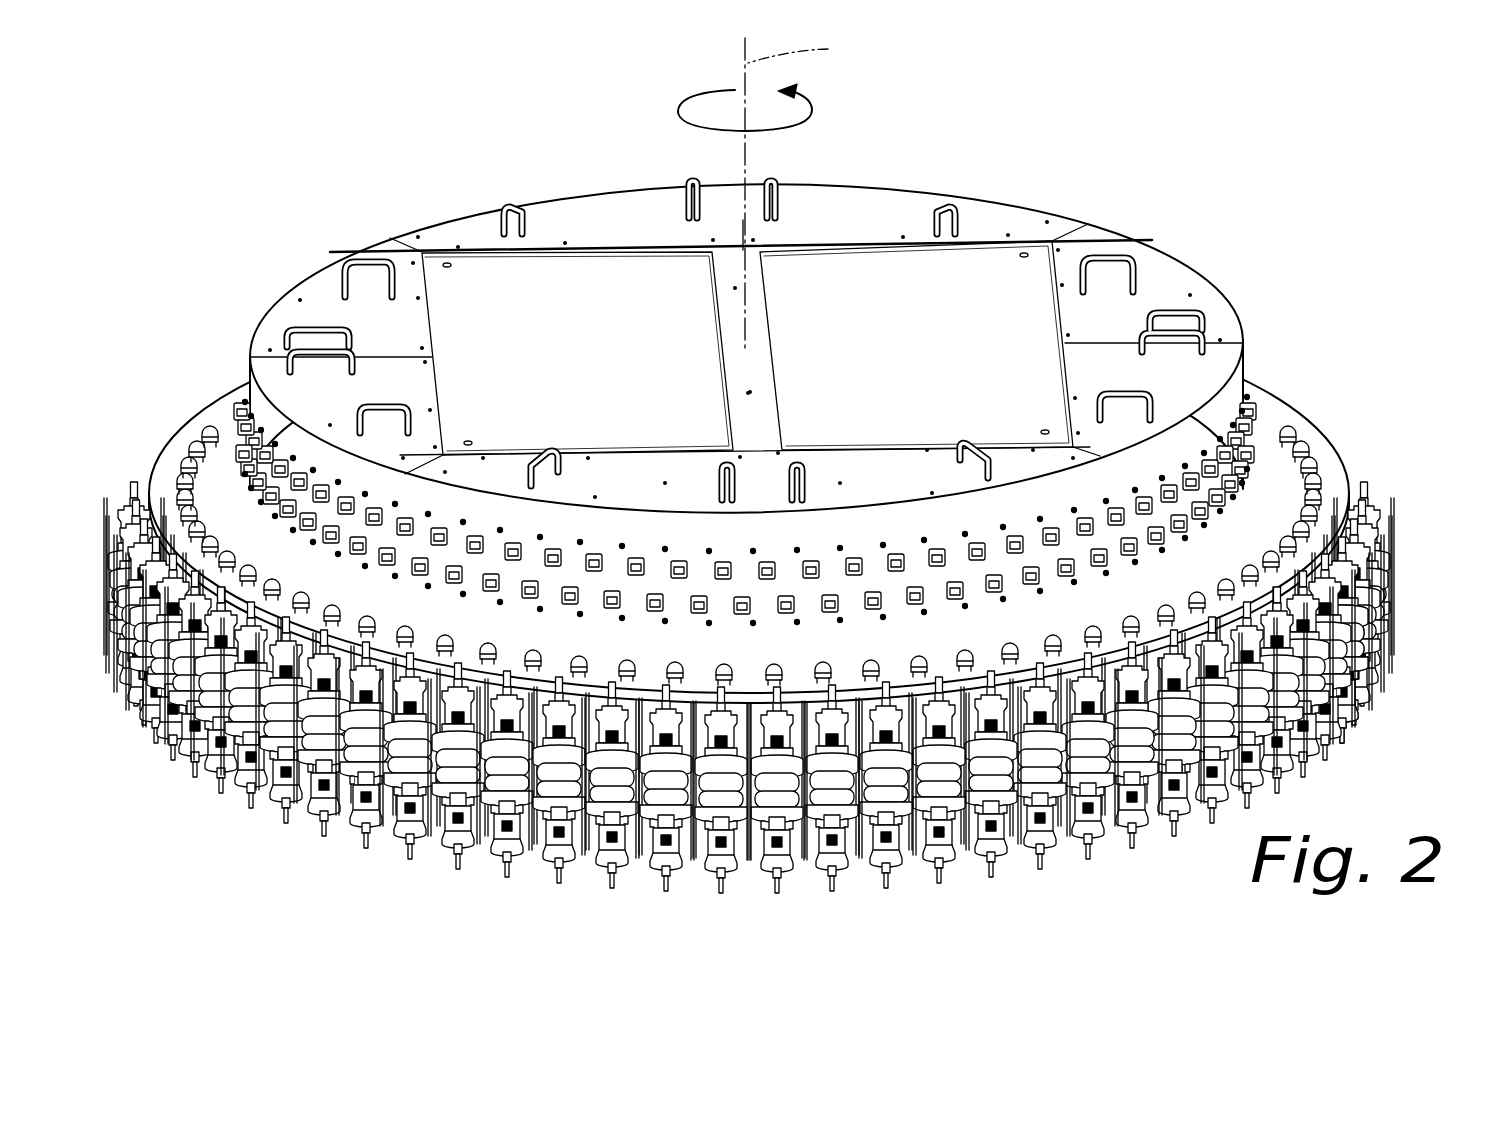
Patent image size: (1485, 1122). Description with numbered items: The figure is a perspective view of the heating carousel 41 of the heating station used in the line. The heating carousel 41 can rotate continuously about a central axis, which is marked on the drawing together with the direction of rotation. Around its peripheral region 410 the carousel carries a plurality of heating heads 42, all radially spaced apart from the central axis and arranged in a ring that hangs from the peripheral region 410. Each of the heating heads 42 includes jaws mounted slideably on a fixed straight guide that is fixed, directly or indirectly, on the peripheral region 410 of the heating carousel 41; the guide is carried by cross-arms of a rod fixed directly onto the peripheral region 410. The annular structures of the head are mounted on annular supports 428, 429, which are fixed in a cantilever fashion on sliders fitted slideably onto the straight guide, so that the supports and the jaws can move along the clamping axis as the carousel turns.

The heating carousel 41 is at (1162, 213).
The peripheral region 410 is at (1323, 470).
The heating heads 42 is at (786, 687).
The annular support 428 is at (1365, 662).
The annular support 429 is at (1383, 641).